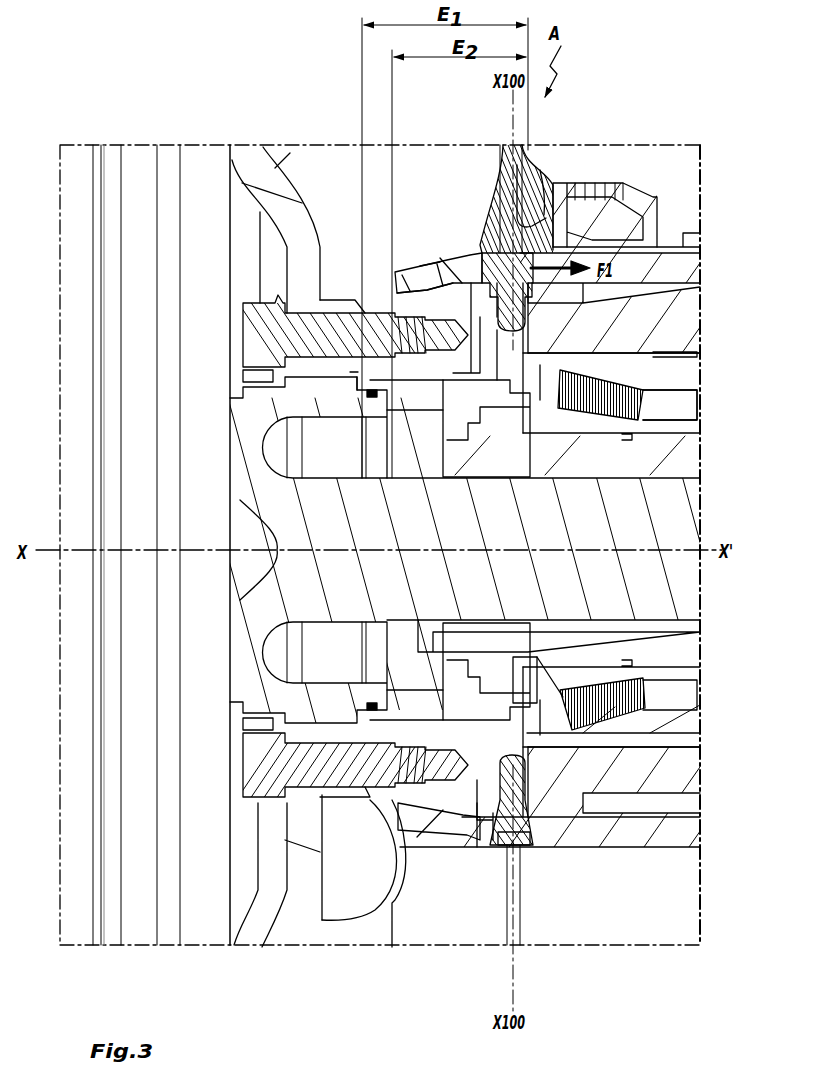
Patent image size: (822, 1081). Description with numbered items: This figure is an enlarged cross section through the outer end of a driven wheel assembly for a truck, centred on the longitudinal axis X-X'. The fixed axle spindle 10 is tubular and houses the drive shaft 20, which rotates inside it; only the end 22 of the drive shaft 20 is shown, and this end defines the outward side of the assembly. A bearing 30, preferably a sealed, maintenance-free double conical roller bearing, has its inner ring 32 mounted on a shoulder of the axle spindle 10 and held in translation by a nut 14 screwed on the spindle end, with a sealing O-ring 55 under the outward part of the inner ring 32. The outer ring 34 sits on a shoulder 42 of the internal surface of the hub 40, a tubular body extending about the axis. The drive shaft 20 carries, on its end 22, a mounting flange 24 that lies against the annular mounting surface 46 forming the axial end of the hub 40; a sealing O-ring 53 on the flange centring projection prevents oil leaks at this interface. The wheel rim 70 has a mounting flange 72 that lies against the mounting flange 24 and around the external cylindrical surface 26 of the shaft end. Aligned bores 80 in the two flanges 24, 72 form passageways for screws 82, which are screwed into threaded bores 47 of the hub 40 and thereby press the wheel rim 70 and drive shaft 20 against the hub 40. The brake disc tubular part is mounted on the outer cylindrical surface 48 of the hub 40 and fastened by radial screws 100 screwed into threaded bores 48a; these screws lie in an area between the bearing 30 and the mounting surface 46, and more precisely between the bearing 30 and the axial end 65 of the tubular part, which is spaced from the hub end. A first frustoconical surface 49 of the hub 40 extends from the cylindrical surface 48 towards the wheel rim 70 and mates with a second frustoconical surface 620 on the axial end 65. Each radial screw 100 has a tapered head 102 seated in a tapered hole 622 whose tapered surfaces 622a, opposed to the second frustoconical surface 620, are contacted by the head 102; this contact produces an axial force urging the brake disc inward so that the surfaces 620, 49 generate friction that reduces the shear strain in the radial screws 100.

The axle spindle 10 is at (690, 645).
The nut 14 is at (480, 425).
The drive shaft 20 is at (678, 515).
The end 22 is at (229, 646).
The mounting flange 24 is at (345, 312).
The external cylindrical surface 26 is at (245, 765).
The bearing 30 is at (659, 396).
The inner ring 32 is at (672, 423).
The outer ring 34 is at (670, 371).
The hub 40 is at (683, 322).
The shoulder 42 is at (539, 737).
The mounting surface 46 is at (350, 373).
The bores 47 is at (385, 808).
The outer cylindrical surface 48 is at (562, 823).
The threaded bores 48a is at (495, 426).
The first frustoconical surface 49 is at (450, 282).
The sealing O-ring 53 is at (427, 271).
The sealing O-ring 55 is at (643, 680).
The axial end 65 is at (405, 275).
The wheel rim 70 is at (292, 186).
The mounting flange 72 is at (302, 277).
The bores 80 is at (296, 318).
The screws 82 is at (262, 357).
The radial screws 100 is at (527, 312).
The tapered head 102 is at (523, 310).
The second frustoconical surface 620 is at (428, 296).
The tapered holes 622 is at (492, 250).
The tapered surfaces 622a is at (493, 233).